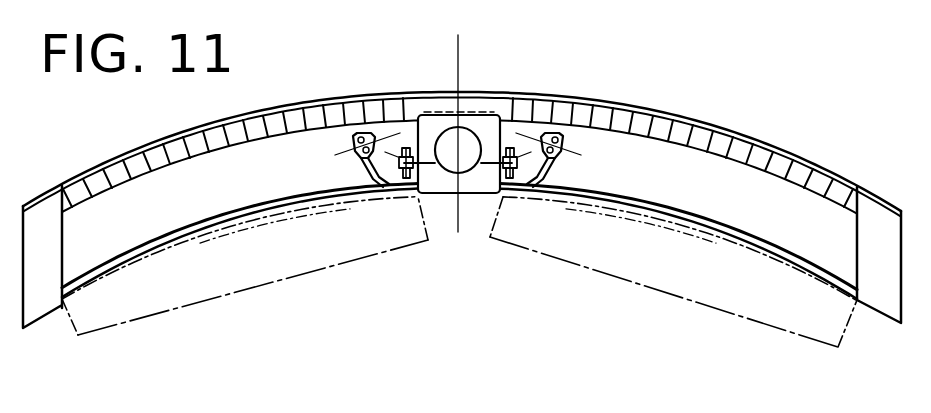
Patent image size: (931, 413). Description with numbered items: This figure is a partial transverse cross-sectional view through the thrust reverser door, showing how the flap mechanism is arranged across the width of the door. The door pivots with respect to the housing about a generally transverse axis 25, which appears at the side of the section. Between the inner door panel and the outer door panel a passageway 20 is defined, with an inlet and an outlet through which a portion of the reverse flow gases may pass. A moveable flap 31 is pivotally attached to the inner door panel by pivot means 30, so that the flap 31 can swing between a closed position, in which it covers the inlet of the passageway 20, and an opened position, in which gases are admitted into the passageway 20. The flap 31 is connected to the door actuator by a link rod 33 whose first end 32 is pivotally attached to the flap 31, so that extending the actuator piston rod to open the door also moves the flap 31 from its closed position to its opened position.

The passageway 20 is at (478, 178).
The transverse axis 25 is at (13, 245).
The pivot means 30 is at (86, 278).
The moveable flap 31 is at (687, 224).
The first end 32 is at (579, 154).
The link rod 33 is at (541, 151).